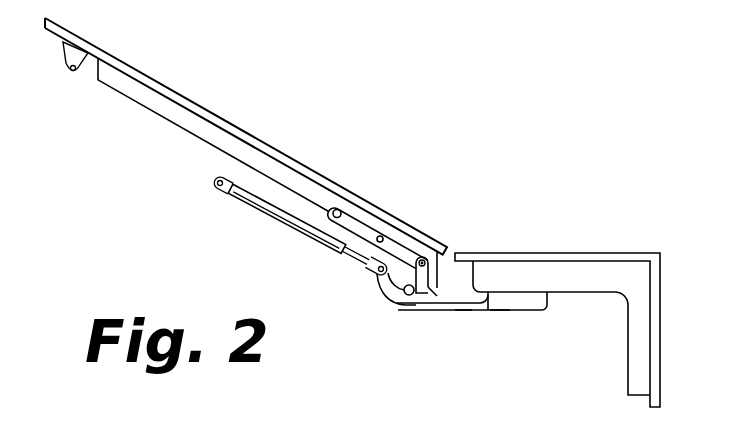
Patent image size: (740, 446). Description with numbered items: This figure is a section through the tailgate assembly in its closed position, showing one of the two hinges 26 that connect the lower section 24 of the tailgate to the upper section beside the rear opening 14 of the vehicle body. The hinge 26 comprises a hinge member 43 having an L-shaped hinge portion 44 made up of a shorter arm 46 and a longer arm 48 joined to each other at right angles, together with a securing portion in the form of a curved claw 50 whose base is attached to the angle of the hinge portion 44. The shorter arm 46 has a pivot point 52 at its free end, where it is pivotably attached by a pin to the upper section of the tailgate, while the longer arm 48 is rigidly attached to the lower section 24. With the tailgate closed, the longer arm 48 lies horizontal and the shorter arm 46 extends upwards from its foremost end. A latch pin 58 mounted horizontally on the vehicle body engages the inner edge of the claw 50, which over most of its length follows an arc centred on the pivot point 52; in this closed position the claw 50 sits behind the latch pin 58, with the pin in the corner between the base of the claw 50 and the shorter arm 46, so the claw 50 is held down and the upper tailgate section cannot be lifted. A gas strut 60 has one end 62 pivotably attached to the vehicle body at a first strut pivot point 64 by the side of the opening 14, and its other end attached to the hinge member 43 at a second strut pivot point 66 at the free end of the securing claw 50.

The opening 14 is at (257, 160).
The lower section 24 is at (571, 277).
The hinge 26 is at (388, 313).
The hinge member 43 is at (463, 314).
The L-shaped hinge portion 44 is at (498, 312).
The shorter arm 46 is at (424, 294).
The longer arm 48 is at (525, 301).
The curved claw 50 is at (380, 279).
The pivot point 52 is at (425, 257).
The latch pin 58 is at (406, 306).
The gas strut 60 is at (284, 216).
The end of gas strut 62 is at (242, 197).
The first strut pivot point 64 is at (214, 181).
The second strut pivot point 66 is at (373, 271).